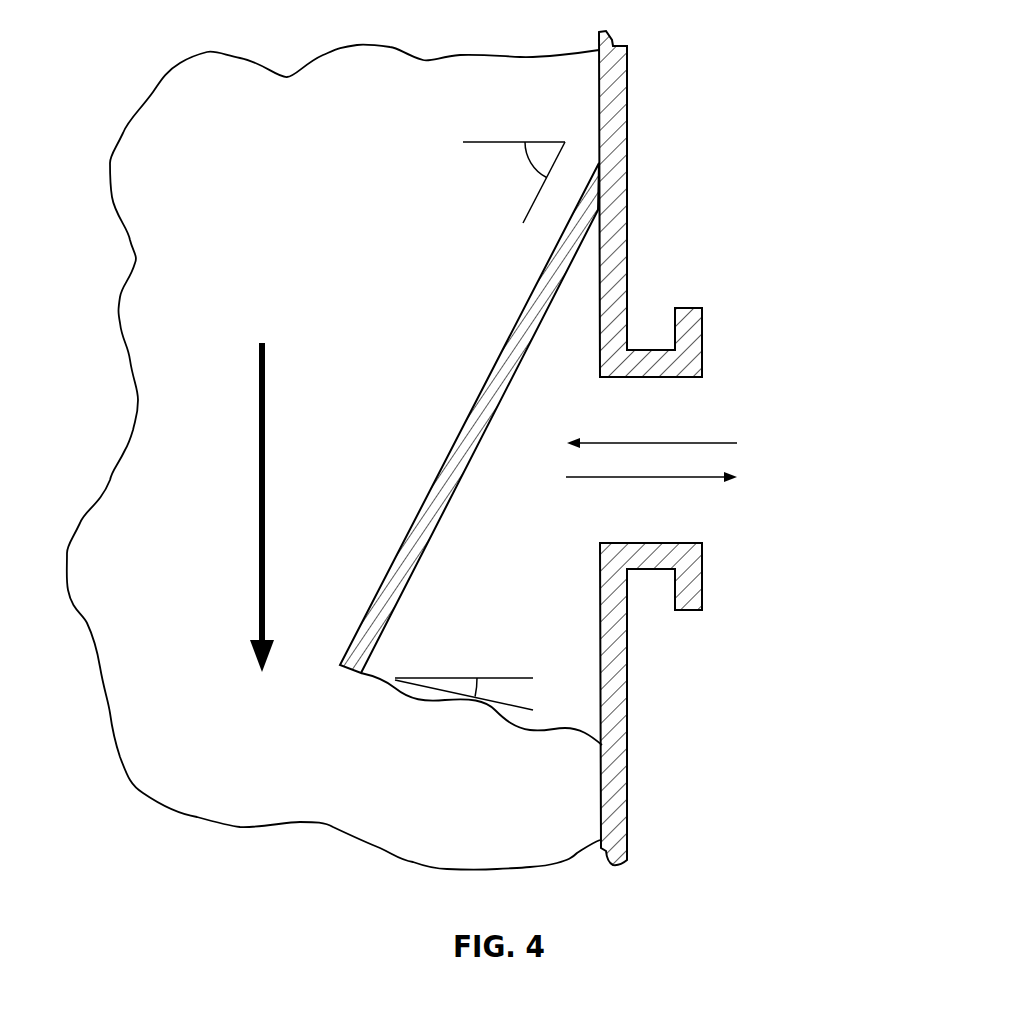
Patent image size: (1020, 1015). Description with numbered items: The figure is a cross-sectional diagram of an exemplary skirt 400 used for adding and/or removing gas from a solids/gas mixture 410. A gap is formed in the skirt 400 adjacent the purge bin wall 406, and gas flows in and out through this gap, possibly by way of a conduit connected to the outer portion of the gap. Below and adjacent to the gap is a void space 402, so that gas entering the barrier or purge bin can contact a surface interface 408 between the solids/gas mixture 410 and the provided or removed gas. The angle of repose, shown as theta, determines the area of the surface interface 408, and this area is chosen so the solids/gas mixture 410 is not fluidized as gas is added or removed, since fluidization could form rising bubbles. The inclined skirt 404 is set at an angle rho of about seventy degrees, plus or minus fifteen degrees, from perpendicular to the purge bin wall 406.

The skirt 400 is at (710, 230).
The void space 402 is at (502, 556).
The skirt 404 is at (532, 293).
The purge bin wall 406 is at (627, 117).
The surface interface 408 is at (551, 735).
The solids/gas mixture 410 is at (383, 406).